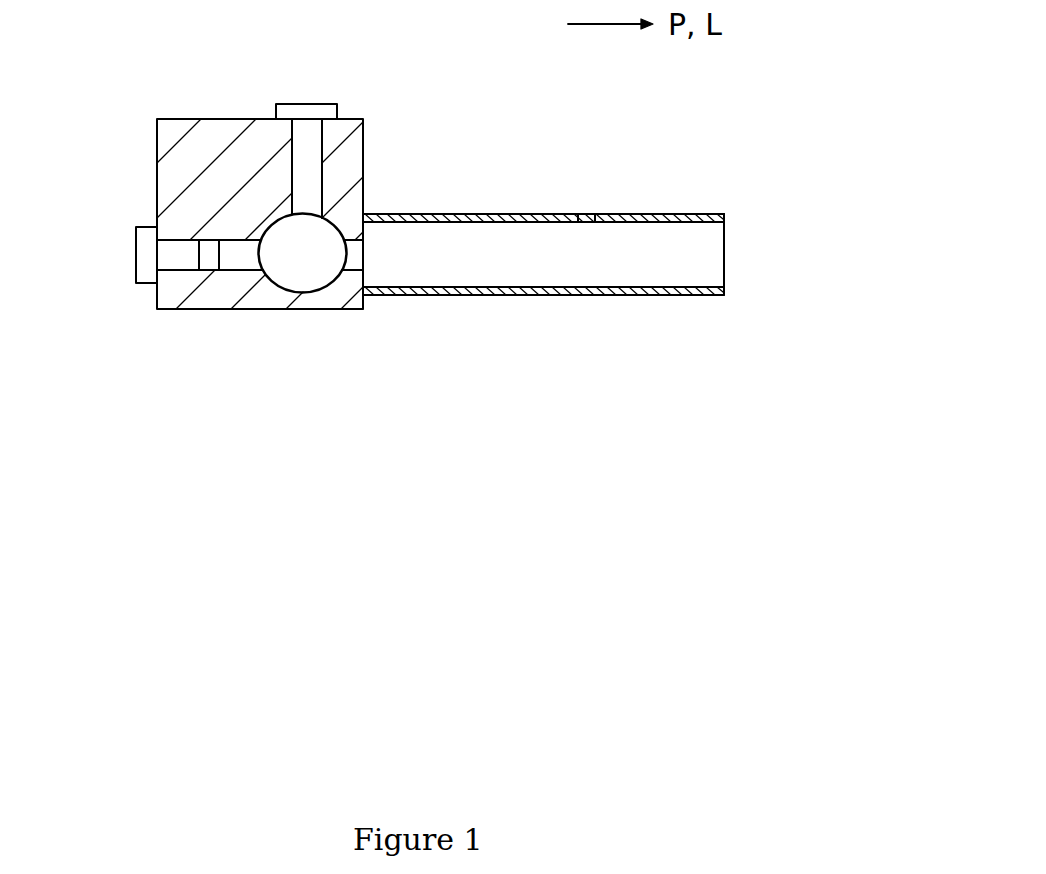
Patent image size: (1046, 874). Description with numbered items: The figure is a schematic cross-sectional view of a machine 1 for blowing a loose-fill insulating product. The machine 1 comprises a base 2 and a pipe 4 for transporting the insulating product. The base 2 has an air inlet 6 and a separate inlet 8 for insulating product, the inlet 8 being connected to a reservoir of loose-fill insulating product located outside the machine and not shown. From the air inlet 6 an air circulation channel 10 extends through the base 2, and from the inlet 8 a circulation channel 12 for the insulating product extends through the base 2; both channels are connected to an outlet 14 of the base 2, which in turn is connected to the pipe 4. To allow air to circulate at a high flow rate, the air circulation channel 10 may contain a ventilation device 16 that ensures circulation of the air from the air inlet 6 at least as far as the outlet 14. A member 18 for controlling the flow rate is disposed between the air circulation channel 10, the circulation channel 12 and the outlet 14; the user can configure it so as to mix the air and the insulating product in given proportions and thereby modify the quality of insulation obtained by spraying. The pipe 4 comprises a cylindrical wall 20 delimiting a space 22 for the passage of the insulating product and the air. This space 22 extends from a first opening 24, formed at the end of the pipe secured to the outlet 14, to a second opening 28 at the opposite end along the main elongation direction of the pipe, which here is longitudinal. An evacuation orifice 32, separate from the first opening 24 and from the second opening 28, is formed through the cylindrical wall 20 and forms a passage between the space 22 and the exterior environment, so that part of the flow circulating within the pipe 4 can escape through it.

The blowing machine 1 is at (128, 78).
The base 2 is at (200, 135).
The pipe 4 is at (497, 273).
The air inlet 6 is at (147, 283).
The inlet for insulating product 8 is at (322, 104).
The air circulation channel 10 is at (177, 257).
The circulation channel for the insulating product 12 is at (308, 154).
The outlet 14 is at (370, 310).
The ventilation device 16 is at (210, 250).
The member for controlling the flow rate 18 is at (292, 273).
The cylindrical wall 20 is at (520, 212).
The space 22 is at (637, 250).
The first opening 24 is at (372, 214).
The second opening 28 is at (725, 274).
The evacuation orifice 32 is at (587, 214).